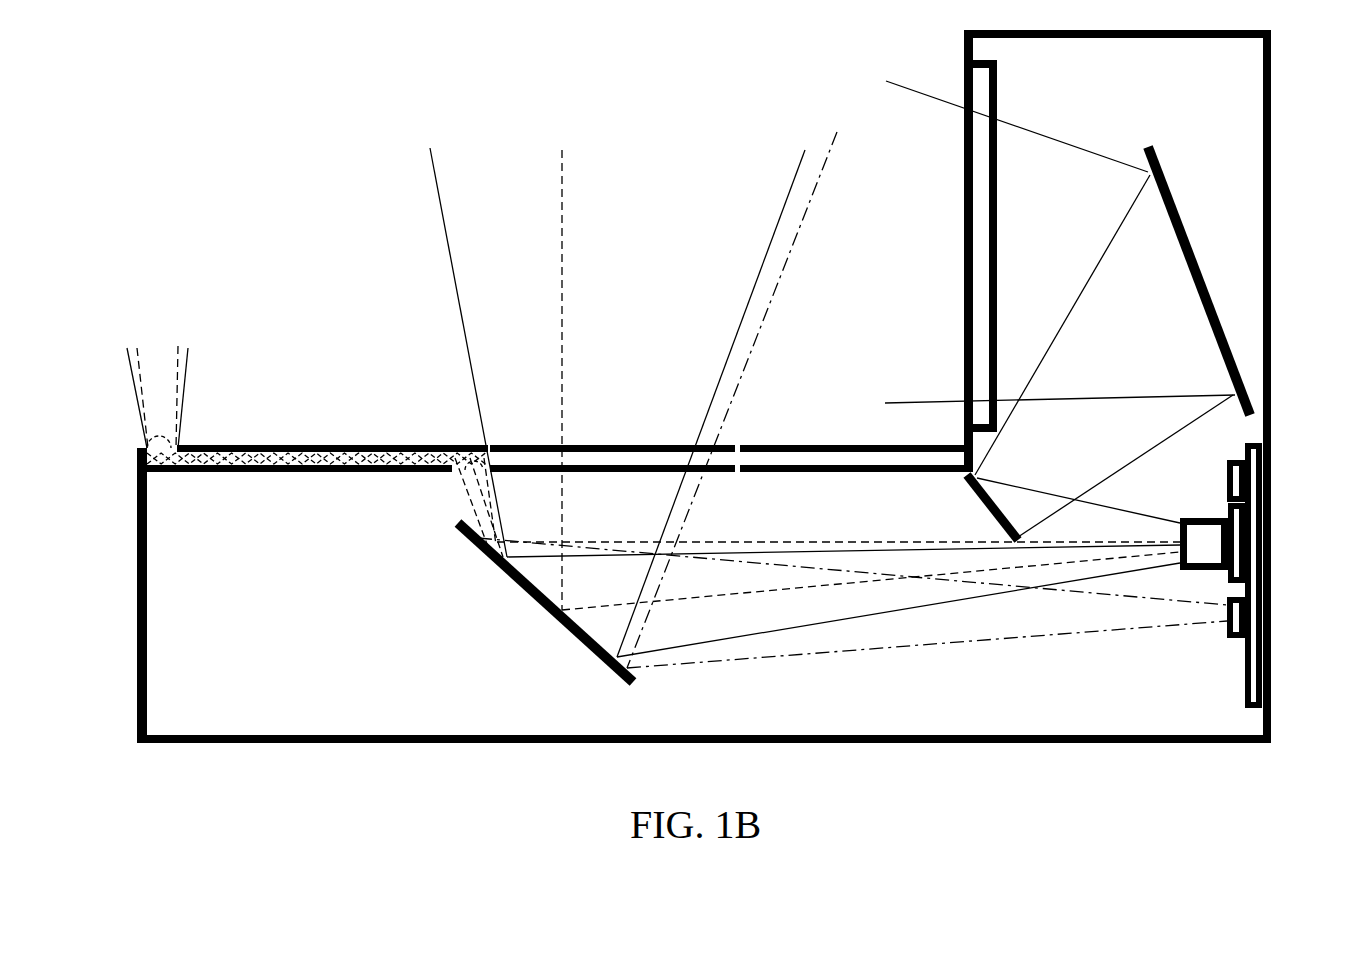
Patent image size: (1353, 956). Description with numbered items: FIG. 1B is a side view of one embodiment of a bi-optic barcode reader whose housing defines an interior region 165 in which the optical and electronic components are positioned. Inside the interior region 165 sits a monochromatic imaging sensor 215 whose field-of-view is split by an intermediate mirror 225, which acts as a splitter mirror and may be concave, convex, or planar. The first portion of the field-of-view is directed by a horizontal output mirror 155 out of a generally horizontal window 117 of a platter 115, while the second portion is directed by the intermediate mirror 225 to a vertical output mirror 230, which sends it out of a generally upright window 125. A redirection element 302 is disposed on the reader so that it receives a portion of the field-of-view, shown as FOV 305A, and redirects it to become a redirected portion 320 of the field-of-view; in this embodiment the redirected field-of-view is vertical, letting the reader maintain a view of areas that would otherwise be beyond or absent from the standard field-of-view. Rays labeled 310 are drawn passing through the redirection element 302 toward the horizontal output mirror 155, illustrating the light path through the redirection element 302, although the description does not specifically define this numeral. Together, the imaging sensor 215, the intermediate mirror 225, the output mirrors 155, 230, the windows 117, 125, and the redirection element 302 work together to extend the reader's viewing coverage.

The interior region 165 is at (137, 632).
The redirection element 302 is at (262, 444).
The generally horizontal window 117 is at (617, 458).
The platter 115 is at (822, 458).
The generally upright window 125 is at (967, 266).
The vertical output mirror 230 is at (1168, 190).
The intermediate mirror 225 is at (970, 489).
The monochromatic imaging sensor 215 is at (1258, 543).
The horizontal output mirror 155 is at (520, 590).
The light rays through platen 310 is at (468, 505).
The redirected portion of the field-of-view 320 is at (130, 380).
The field-of-view 305A is at (437, 200).